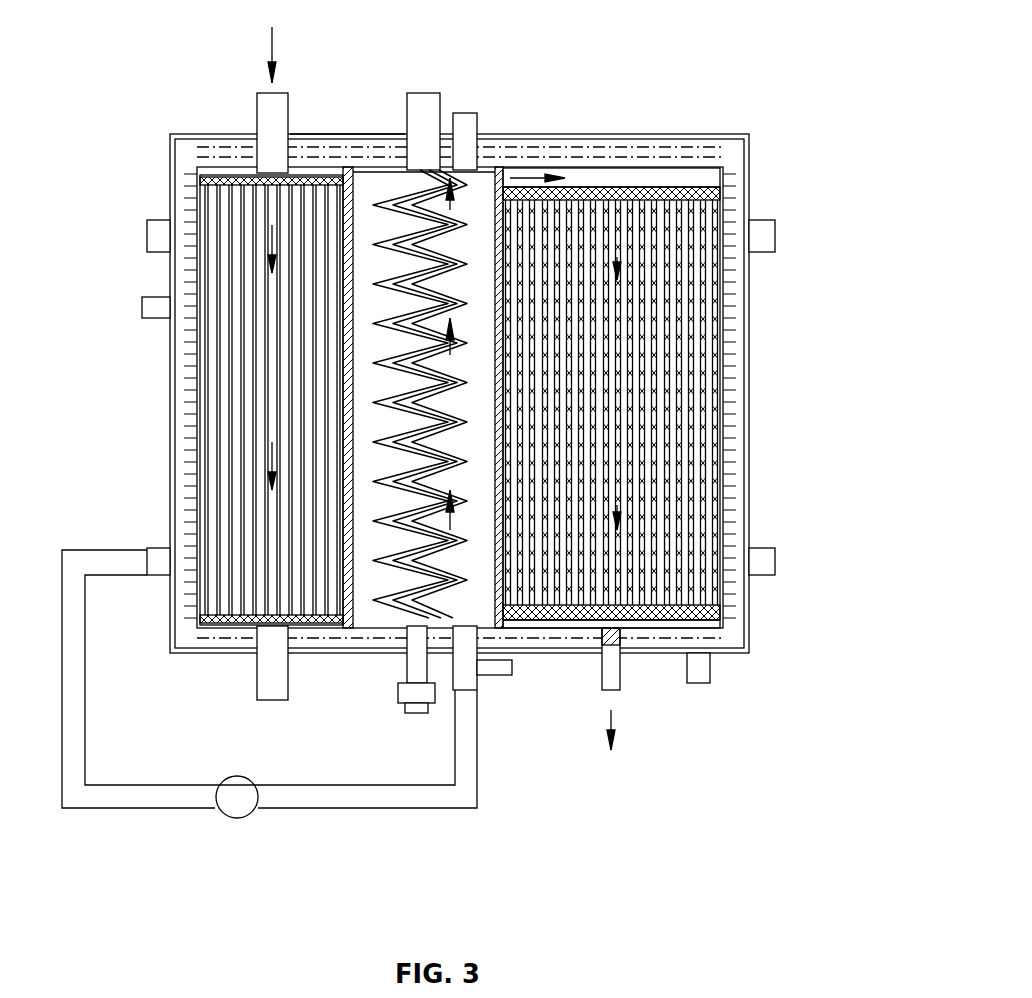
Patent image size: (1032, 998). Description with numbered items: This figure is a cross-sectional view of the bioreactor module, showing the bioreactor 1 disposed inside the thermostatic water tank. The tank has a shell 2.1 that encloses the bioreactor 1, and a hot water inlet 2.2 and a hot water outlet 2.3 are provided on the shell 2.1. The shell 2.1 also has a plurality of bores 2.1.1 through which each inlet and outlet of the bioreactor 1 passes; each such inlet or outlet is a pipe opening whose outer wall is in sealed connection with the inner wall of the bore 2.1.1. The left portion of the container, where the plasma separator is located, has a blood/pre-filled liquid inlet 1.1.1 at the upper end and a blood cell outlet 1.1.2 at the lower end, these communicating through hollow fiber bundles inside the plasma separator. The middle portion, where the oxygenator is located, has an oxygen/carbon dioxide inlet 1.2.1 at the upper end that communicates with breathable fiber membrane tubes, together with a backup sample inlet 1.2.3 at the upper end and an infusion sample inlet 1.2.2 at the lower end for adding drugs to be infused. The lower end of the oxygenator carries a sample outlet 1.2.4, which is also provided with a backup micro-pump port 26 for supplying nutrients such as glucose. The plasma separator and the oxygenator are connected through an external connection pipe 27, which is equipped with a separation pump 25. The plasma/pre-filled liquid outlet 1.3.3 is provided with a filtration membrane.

The bioreactor 1 is at (725, 172).
The blood/pre-filled liquid inlet 1.1.1 is at (257, 105).
The blood cell outlet 1.1.2 is at (253, 692).
The oxygen/carbon dioxide inlet 1.2.1 is at (570, 52).
The infusion sample inlet 1.2.2 is at (402, 722).
The backup sample inlet of the oxygenator 1.2.3 is at (590, 115).
The sample outlet of the oxygenator 1.2.4 is at (478, 687).
The plasma/pre-filled liquid outlet 1.3.3 is at (735, 743).
The shell 2.1 is at (748, 108).
The bore 2.1.1 is at (297, 134).
The hot water inlet 2.2 is at (148, 320).
The hot water outlet 2.3 is at (712, 672).
The separation pump 25 is at (323, 870).
The backup micro-pump port 26 is at (483, 675).
The external connection pipe 27 is at (318, 795).